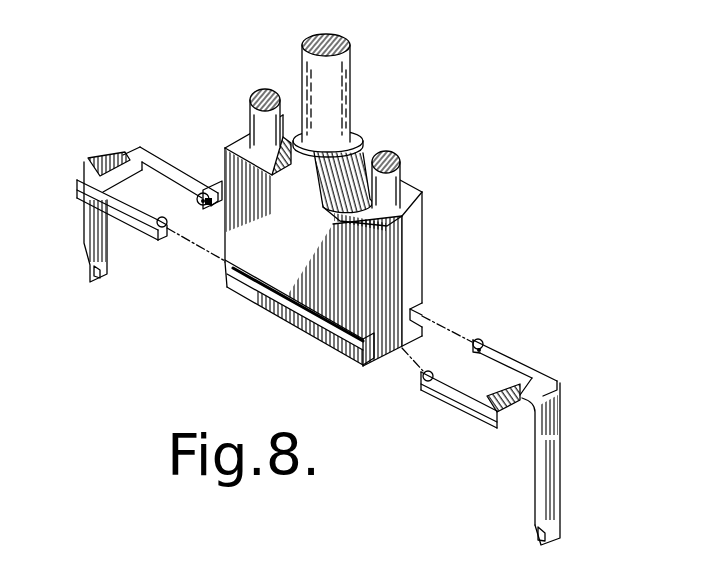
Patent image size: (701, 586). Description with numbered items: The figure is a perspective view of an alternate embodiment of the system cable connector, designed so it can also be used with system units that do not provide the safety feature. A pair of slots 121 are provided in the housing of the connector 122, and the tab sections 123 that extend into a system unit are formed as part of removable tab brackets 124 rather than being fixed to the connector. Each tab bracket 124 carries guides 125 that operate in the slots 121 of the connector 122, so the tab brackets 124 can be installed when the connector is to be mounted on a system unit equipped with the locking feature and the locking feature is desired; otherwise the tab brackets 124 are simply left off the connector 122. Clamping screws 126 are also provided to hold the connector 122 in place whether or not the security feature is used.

The slots 121 is at (330, 347).
The connector 122 is at (425, 238).
The tab sections 123 is at (98, 283).
The tab brackets 124 is at (98, 150).
The guides 125 is at (193, 172).
The clamping screws 126 is at (266, 88).